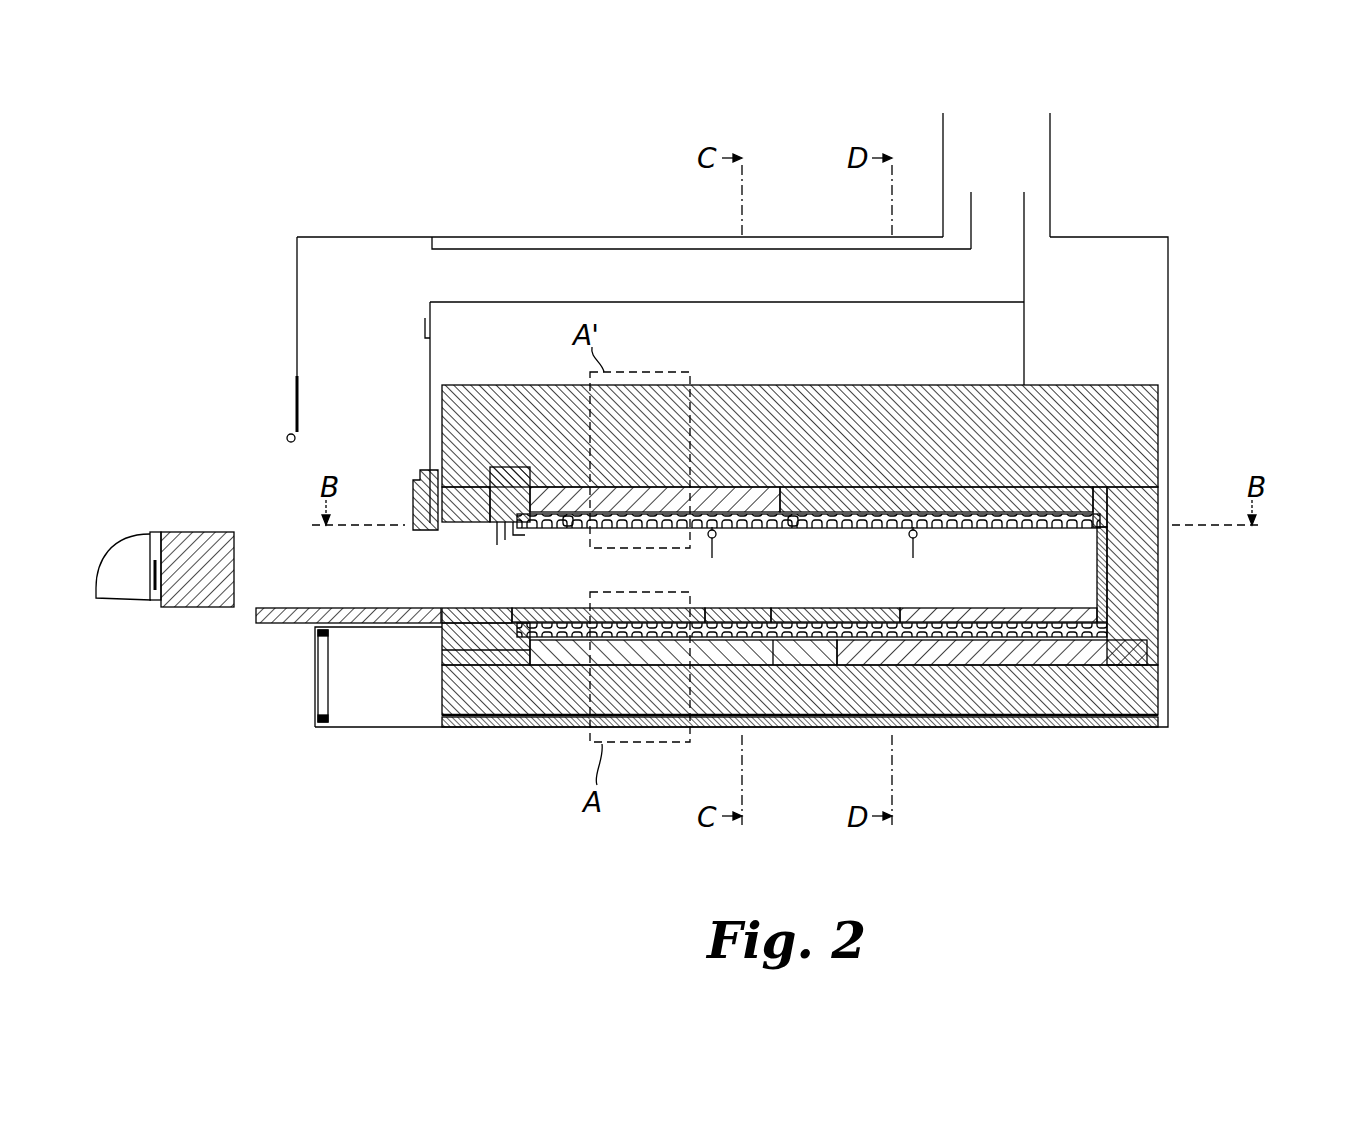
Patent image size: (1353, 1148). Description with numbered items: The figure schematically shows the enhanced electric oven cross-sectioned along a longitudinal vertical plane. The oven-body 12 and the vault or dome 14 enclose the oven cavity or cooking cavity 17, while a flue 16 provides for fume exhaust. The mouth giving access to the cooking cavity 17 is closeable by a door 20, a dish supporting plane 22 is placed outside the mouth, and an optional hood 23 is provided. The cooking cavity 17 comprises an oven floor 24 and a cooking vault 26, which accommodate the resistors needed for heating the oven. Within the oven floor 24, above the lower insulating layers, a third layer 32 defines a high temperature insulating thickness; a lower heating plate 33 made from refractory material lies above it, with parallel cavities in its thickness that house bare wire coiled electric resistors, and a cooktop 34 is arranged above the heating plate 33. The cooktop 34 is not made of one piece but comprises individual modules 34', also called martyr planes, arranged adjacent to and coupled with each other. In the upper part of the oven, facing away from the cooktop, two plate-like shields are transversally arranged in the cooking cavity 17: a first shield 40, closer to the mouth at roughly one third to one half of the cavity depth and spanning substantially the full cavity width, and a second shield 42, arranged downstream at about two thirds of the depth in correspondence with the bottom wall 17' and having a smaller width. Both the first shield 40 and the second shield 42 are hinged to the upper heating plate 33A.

The oven-body 12 is at (1168, 645).
The vault or dome 14 is at (1108, 237).
The flue 16 is at (1003, 130).
The oven cavity or cooking cavity 17 is at (1110, 640).
The bottom wall of the cooking cavity 17' is at (1169, 582).
The door 20 is at (152, 534).
The dish supporting plane 22 is at (292, 607).
The hood 23 is at (297, 318).
The oven floor 24 is at (984, 652).
The cooking vault 26 is at (722, 482).
The third layer 32 is at (1072, 500).
The lower heating plate 33 is at (1058, 530).
The upper heating plate 33A is at (762, 528).
The cooktop 34 is at (961, 692).
The individual modules 34' is at (670, 690).
The first shield 40 is at (712, 547).
The second shield 42 is at (913, 547).